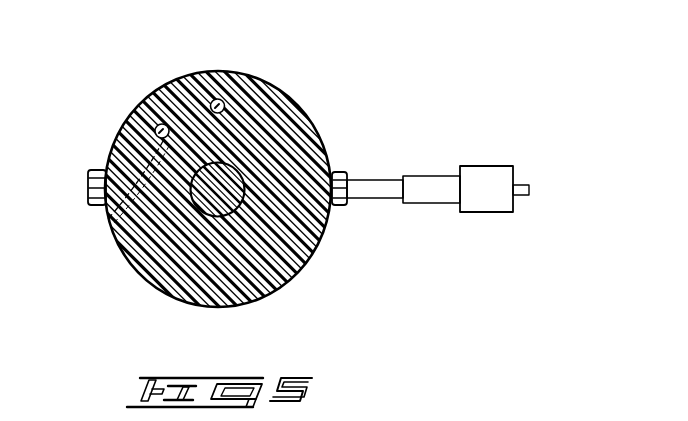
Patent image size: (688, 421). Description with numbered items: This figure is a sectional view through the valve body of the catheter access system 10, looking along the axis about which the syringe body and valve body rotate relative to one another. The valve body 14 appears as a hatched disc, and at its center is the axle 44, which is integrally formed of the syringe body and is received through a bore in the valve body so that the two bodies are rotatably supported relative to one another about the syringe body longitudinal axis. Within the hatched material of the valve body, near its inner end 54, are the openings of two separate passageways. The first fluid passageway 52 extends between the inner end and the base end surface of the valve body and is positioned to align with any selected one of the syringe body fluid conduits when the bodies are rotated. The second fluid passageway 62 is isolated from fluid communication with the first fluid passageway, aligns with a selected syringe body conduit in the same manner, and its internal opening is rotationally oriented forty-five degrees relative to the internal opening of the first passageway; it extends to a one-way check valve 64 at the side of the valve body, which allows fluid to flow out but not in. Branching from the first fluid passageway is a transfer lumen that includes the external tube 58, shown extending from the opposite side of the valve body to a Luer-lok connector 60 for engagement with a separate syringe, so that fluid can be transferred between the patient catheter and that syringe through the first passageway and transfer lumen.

The catheter access system 10 is at (368, 53).
The valve body 14 is at (314, 121).
The axle 44 is at (197, 208).
The first fluid passageway 52 is at (219, 99).
The inner end 54 is at (178, 268).
The external tube 58 is at (370, 185).
The Luer-lok connector 60 is at (493, 187).
The second fluid passageway 62 is at (164, 124).
The one-way check valve 64 is at (90, 182).